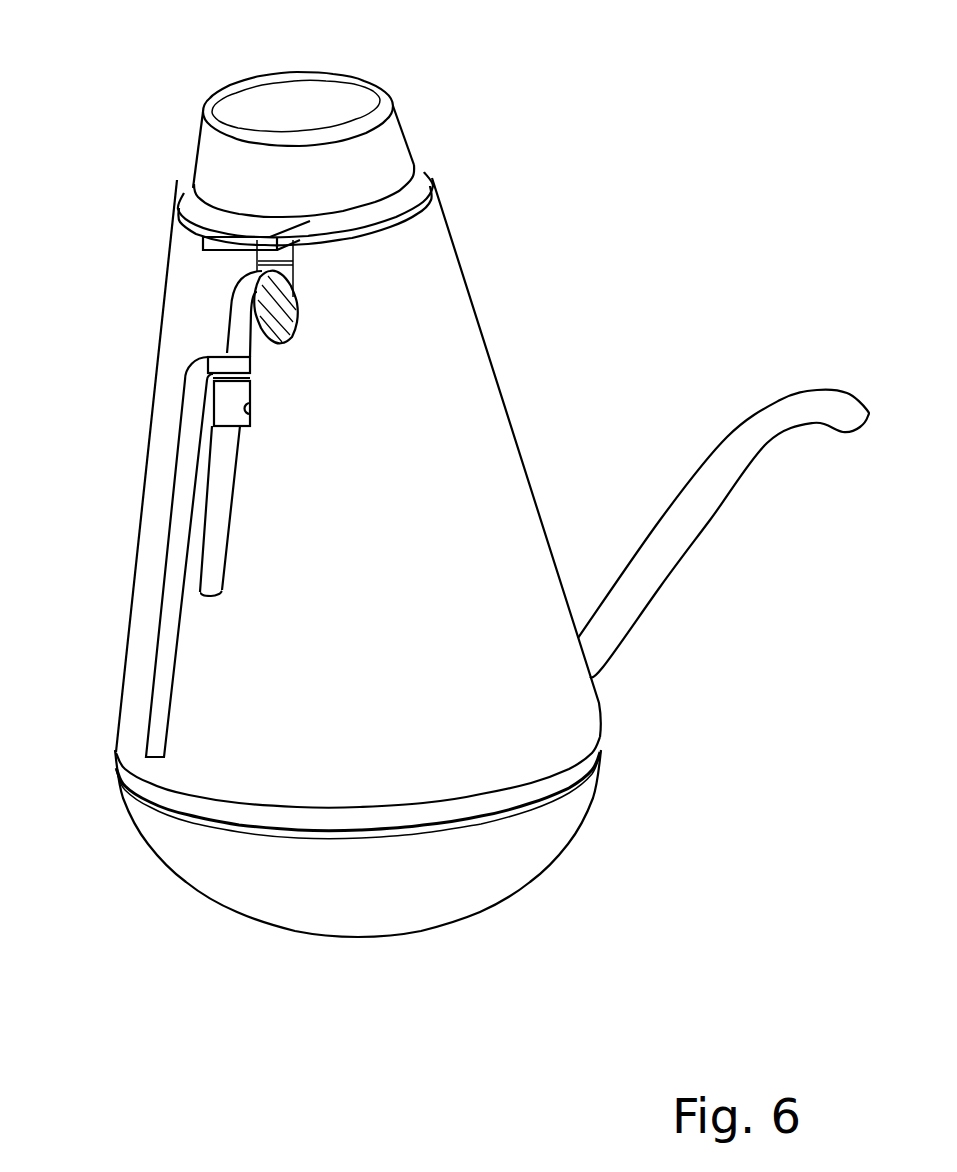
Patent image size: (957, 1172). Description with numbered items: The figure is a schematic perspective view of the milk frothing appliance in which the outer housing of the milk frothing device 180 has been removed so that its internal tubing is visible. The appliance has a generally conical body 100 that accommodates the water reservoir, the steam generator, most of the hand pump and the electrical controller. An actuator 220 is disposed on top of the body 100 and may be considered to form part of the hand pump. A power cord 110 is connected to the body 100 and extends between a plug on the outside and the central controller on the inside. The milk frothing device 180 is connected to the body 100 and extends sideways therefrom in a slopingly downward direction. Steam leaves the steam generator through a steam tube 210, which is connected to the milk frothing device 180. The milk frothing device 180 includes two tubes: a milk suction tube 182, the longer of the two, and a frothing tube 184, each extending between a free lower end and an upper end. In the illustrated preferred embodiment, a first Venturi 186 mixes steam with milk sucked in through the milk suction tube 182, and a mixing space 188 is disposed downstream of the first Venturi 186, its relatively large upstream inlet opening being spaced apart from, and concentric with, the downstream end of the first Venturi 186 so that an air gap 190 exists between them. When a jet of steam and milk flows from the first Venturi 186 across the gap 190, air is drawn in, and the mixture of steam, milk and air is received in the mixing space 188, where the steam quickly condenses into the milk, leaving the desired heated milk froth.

The body 100 is at (449, 365).
The power cord 110 is at (690, 520).
The milk frothing device 180 is at (193, 326).
The milk suction tube 182 is at (170, 626).
The frothing tube 184 is at (211, 557).
The first Venturi 186 is at (237, 366).
The mixing space 188 is at (231, 411).
The air gap 190 is at (265, 394).
The steam tube 210 is at (275, 307).
The actuator 220 is at (402, 88).